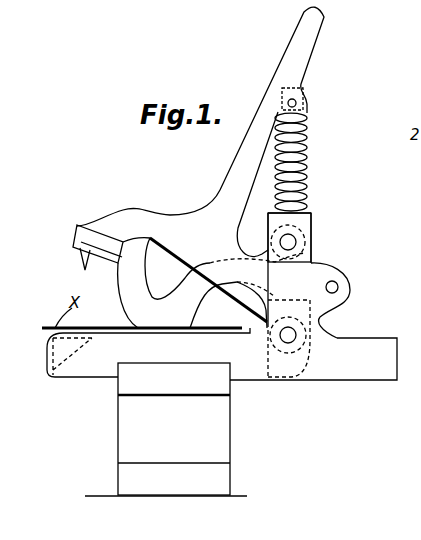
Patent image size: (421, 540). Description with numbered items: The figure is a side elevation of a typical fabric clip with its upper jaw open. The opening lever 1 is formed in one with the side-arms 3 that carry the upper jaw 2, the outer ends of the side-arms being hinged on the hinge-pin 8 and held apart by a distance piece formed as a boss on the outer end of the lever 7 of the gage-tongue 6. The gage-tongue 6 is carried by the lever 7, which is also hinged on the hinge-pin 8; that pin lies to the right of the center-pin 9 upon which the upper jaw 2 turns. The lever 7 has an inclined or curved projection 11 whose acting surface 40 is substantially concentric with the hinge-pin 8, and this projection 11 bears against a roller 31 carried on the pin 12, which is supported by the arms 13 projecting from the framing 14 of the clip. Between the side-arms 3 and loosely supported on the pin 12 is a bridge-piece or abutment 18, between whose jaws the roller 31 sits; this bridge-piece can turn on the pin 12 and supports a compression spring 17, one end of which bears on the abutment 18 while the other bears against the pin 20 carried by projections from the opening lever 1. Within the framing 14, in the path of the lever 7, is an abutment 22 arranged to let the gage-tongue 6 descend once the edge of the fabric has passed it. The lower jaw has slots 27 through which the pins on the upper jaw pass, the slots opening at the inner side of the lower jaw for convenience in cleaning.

The opening lever 1 is at (272, 131).
The upper jaw 2 is at (98, 253).
The side-arms 3 is at (252, 292).
The gage-tongue 6 is at (172, 259).
The lever of the gage-tongue 7 is at (277, 295).
The hinge-pin 8 is at (334, 288).
The center-pin 9 is at (287, 340).
The inclined or curved projection 11 is at (313, 257).
The pin 12 is at (292, 241).
The arms 13 is at (340, 273).
The framing 14 is at (219, 354).
The compression spring 17 is at (304, 141).
The bridge-piece or abutment 18 is at (311, 215).
The pin 20 is at (304, 103).
The abutment 22 is at (327, 317).
The slots 27 is at (53, 351).
The roller 31 is at (333, 212).
The acting surface 40 is at (300, 262).